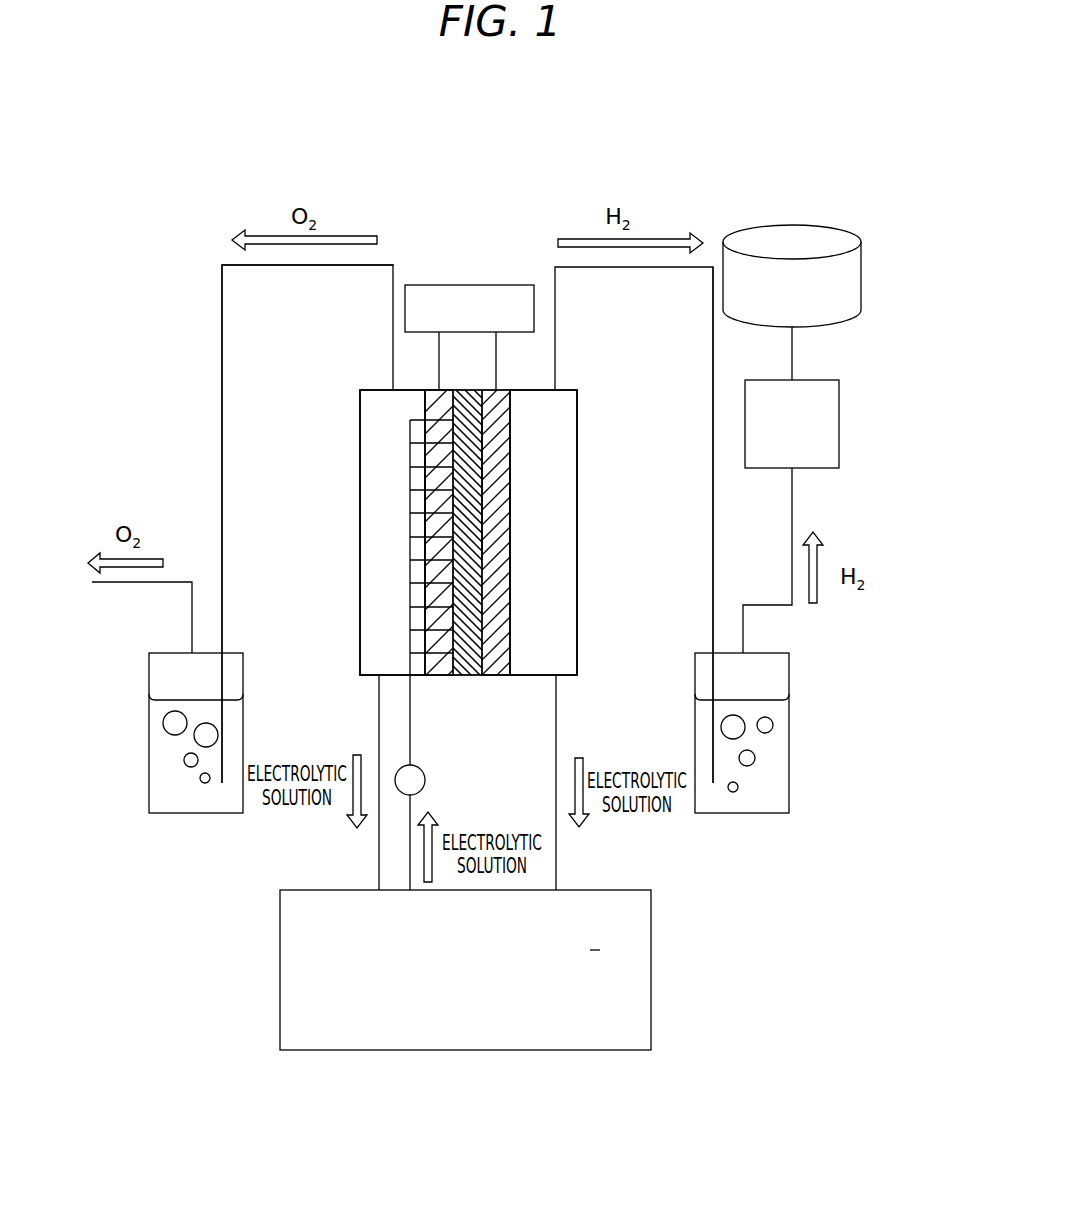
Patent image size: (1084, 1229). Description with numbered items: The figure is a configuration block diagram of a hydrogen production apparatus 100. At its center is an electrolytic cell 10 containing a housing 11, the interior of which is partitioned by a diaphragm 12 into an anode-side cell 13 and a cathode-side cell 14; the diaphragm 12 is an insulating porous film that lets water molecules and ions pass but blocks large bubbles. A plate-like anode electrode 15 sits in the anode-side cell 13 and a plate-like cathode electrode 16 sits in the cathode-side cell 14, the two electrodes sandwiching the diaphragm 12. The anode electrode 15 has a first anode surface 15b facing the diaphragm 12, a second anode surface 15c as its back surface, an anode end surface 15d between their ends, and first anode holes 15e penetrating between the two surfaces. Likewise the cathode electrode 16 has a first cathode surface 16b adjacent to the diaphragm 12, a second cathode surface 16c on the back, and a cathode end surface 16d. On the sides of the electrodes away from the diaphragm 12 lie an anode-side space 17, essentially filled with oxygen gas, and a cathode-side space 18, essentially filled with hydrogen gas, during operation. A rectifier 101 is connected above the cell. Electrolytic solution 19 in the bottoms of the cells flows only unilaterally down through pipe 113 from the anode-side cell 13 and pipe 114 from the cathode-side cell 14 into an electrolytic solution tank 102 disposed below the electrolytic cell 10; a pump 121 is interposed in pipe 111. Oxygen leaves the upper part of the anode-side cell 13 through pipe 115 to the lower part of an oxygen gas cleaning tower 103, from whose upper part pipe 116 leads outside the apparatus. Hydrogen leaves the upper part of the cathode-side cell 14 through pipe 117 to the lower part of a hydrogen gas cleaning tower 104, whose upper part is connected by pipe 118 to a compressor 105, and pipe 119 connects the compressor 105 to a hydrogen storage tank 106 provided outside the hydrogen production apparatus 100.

The hydrogen production apparatus 100 is at (762, 197).
The rectifier 101 is at (477, 285).
The electrolytic solution tank 102 is at (651, 996).
The oxygen gas cleaning tower 103 is at (149, 752).
The hydrogen gas cleaning tower 104 is at (789, 762).
The compressor 105 is at (839, 438).
The hydrogen storage tank 106 is at (861, 285).
The electrolytic cell 10 is at (574, 377).
The housing 11 is at (578, 413).
The diaphragm 12 is at (474, 676).
The anode-side cell 13 is at (360, 656).
The cathode-side cell 14 is at (578, 441).
The anode electrode 15 is at (438, 477).
The first anode surface 15b is at (450, 430).
The second anode surface 15c is at (428, 517).
The anode end surface 15d is at (430, 676).
The first anode hole 15e is at (442, 421).
The cathode electrode 16 is at (497, 520).
The first cathode surface 16b is at (488, 482).
The second cathode surface 16c is at (513, 550).
The cathode end surface 16d is at (504, 676).
The anode-side space 17 is at (390, 578).
The cathode-side space 18 is at (543, 610).
The electrolytic solution 19 is at (590, 950).
The pipe 111 is at (410, 838).
The pipe 113 is at (379, 878).
The pipe 114 is at (556, 878).
The pipe 115 is at (222, 608).
The pipe 116 is at (192, 622).
The pipe 117 is at (713, 652).
The pipe 118 is at (792, 505).
The pipe 119 is at (792, 357).
The pump 121 is at (425, 787).